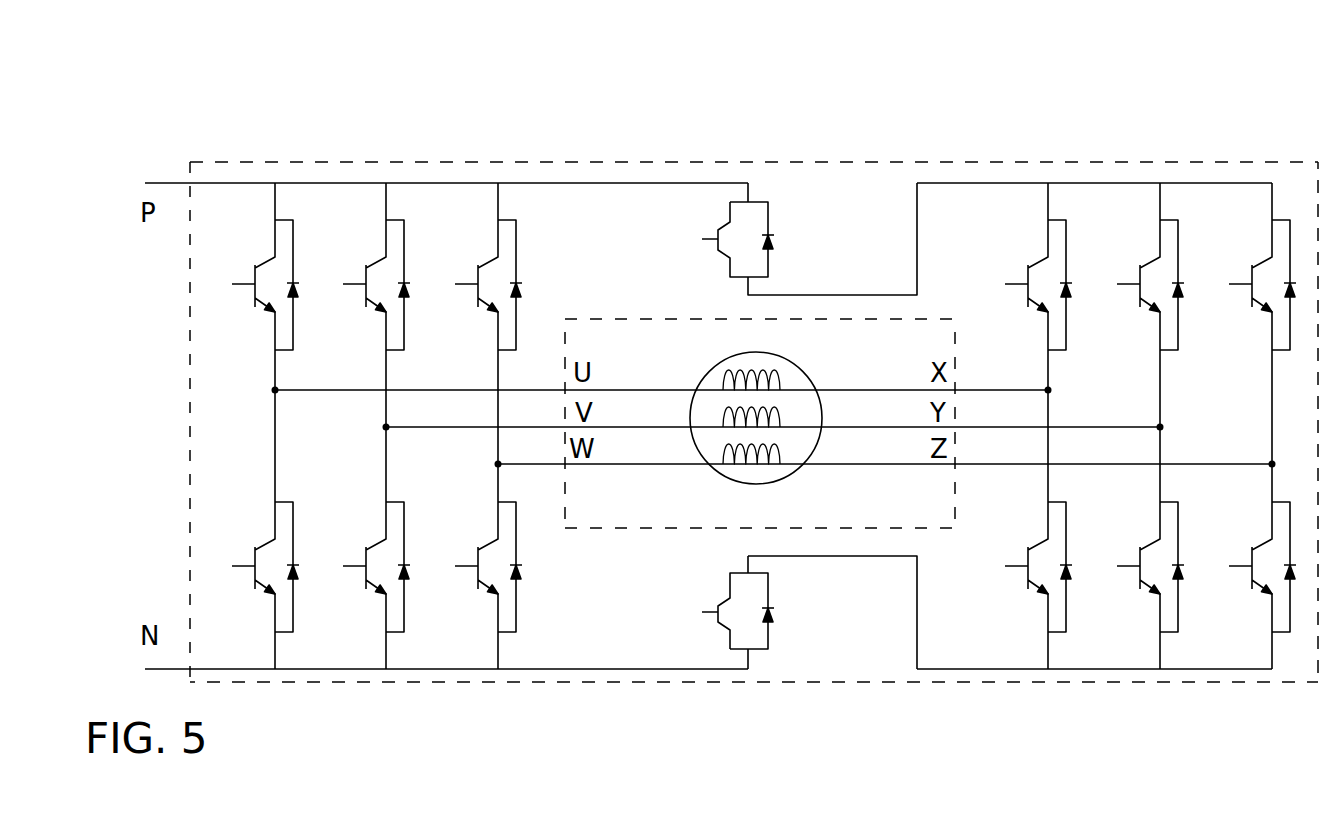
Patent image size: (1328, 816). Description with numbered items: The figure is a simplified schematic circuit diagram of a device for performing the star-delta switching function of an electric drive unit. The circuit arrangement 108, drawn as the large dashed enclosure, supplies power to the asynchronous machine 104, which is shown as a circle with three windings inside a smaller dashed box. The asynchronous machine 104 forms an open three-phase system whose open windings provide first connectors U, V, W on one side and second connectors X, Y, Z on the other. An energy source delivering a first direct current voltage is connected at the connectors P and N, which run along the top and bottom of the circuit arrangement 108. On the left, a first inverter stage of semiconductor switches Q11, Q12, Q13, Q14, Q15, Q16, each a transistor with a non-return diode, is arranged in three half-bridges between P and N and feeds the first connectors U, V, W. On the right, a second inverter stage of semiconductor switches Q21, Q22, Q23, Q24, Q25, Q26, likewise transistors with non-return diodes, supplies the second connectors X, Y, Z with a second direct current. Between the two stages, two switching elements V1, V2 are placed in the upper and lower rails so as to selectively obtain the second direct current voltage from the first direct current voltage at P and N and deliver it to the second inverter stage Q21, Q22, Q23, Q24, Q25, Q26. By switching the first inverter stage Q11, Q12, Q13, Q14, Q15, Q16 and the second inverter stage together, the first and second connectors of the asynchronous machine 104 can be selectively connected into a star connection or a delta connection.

The circuit arrangement 108 is at (449, 162).
The asynchronous machine 104 is at (782, 361).
The semiconductor switch Q11 is at (251, 266).
The semiconductor switch Q12 is at (364, 266).
The semiconductor switch Q13 is at (476, 266).
The semiconductor switch Q14 is at (251, 548).
The semiconductor switch Q15 is at (364, 548).
The semiconductor switch Q16 is at (474, 548).
The semiconductor switch Q21 is at (1029, 266).
The semiconductor switch Q22 is at (1140, 266).
The semiconductor switch Q23 is at (1252, 266).
The semiconductor switch Q24 is at (1029, 548).
The semiconductor switch Q25 is at (1140, 548).
The semiconductor switch Q26 is at (1252, 548).
The switching element V1 is at (796, 239).
The switching element V2 is at (796, 612).